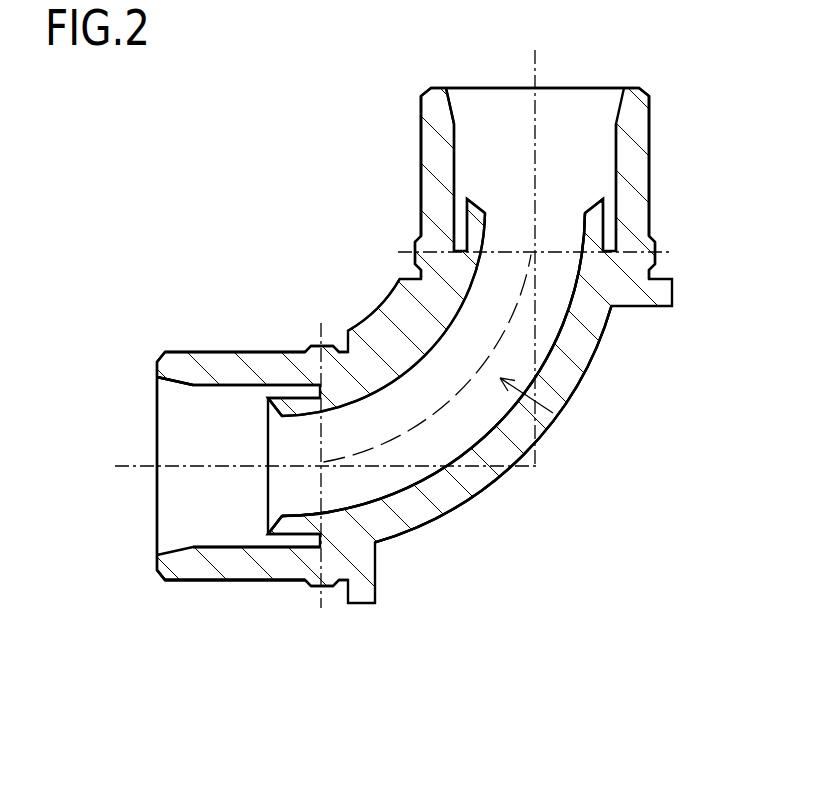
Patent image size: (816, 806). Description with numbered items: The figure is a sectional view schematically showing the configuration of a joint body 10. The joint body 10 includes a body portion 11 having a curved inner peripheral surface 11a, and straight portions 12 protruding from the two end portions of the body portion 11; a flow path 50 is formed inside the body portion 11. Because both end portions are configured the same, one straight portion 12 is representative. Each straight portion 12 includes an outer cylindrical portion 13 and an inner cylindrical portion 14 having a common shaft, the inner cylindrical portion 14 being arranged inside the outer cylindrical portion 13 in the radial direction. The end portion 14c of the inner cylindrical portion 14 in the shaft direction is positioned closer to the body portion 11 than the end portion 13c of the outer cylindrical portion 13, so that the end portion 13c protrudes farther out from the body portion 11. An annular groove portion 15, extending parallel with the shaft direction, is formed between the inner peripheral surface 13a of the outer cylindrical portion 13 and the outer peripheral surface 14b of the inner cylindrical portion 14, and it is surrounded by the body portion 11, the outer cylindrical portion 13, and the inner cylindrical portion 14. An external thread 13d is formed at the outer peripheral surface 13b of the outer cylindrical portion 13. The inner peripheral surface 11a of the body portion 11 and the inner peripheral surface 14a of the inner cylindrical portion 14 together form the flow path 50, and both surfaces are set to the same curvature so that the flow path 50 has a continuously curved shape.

The joint body 10 is at (160, 177).
The body portion 11 is at (371, 318).
The inner peripheral surface of the body portion 11a is at (484, 436).
The straight portion 12 is at (743, 118).
The outer cylindrical portion 13 is at (624, 150).
The inner peripheral surface of the outer cylindrical portion 13a is at (226, 542).
The outer peripheral surface of the outer cylindrical portion 13b is at (182, 573).
The end portion of the outer cylindrical portion 13c is at (162, 377).
The external thread 13d is at (255, 579).
The inner cylindrical portion 14 is at (596, 213).
The inner peripheral surface of the inner cylindrical portion 14a is at (298, 513).
The outer peripheral surface of the inner cylindrical portion 14b is at (283, 532).
The end portion of the inner cylindrical portion 14c is at (266, 399).
The groove portion 15 is at (267, 540).
The flow path 50 is at (553, 413).